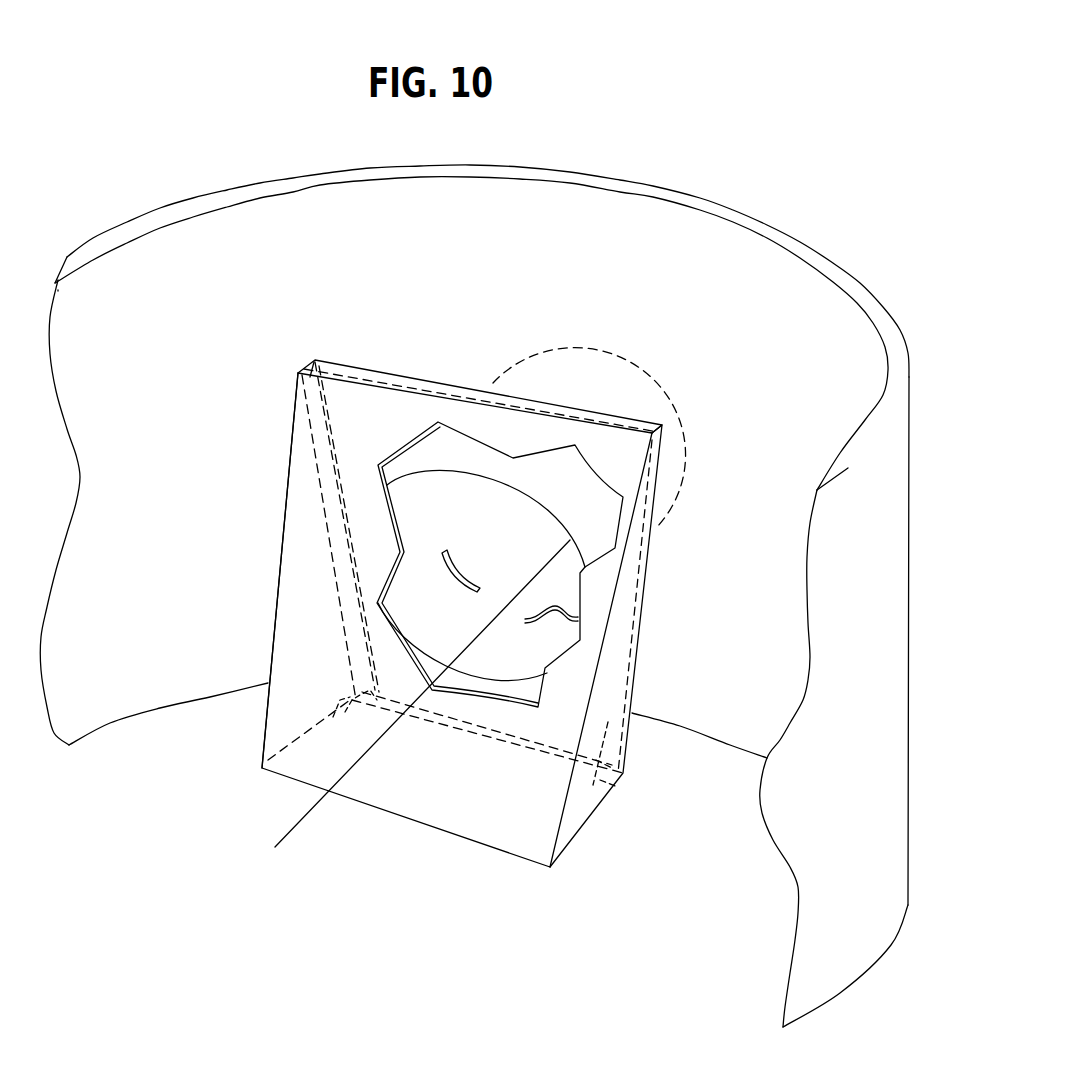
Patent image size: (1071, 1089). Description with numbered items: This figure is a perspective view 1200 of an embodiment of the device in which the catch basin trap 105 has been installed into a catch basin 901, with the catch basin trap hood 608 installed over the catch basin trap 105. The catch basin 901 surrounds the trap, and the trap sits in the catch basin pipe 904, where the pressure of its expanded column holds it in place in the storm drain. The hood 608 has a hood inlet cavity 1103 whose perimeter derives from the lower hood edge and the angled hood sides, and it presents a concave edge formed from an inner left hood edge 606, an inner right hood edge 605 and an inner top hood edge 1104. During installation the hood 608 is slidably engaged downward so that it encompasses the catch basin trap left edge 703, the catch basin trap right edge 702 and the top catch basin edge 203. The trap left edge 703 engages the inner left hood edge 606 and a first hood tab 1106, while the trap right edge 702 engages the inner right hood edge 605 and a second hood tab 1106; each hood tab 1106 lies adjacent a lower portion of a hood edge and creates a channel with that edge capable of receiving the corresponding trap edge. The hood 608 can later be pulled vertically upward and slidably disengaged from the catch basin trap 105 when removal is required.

The perspective view 1200 is at (138, 135).
The catch basin 901 is at (652, 235).
The top catch basin edge 203 is at (375, 372).
The inner top hood edge 1104 is at (424, 372).
The catch basin trap 105 is at (560, 477).
The catch basin trap left edge 703 is at (317, 415).
The inner left hood edge 606 is at (325, 425).
The inner right hood edge 605 is at (657, 467).
The catch basin trap right edge 702 is at (653, 548).
The catch basin trap hood 608 is at (300, 615).
The hood tab 1106 is at (333, 694).
The catch basin pipe 904 is at (402, 709).
The hood inlet cavity 1103 is at (493, 810).